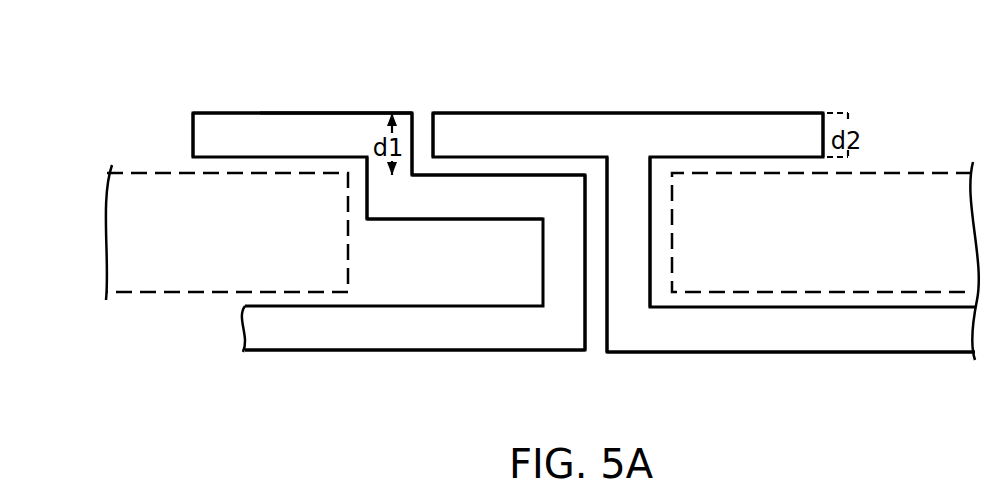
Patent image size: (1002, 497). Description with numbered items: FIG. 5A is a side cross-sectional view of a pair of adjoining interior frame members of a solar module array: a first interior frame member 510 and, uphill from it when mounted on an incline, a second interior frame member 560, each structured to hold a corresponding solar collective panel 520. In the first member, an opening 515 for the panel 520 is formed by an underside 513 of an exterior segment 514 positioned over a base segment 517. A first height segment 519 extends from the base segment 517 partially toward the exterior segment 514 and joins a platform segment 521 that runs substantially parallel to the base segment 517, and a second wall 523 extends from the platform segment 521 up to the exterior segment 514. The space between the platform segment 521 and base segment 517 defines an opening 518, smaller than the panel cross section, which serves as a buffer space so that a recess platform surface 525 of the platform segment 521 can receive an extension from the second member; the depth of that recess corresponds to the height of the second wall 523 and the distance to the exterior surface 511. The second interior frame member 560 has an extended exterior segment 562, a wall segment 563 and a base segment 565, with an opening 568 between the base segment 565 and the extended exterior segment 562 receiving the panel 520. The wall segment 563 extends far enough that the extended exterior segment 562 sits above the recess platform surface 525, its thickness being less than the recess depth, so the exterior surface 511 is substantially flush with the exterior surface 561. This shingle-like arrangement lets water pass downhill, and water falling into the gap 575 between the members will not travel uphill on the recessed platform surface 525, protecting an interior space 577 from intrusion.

The first interior frame member 510 is at (287, 84).
The exterior surface 511 is at (227, 113).
The underside 513 is at (205, 160).
The exterior segment 514 is at (320, 122).
The opening 515 is at (307, 157).
The base segment 517 is at (363, 340).
The opening 518 is at (508, 219).
The first height segment 519 is at (568, 272).
The solar collective panel 520 is at (168, 233).
The platform segment 521 is at (440, 206).
The second wall 523 is at (395, 190).
The recess platform surface 525 is at (550, 177).
The second interior frame member 560 is at (695, 47).
The exterior surface 561 is at (586, 113).
The extended exterior segment 562 is at (773, 133).
The wall segment 563 is at (638, 237).
The base segment 565 is at (712, 304).
The opening 568 is at (802, 157).
The gap 575 is at (430, 128).
The interior space 577 is at (858, 352).